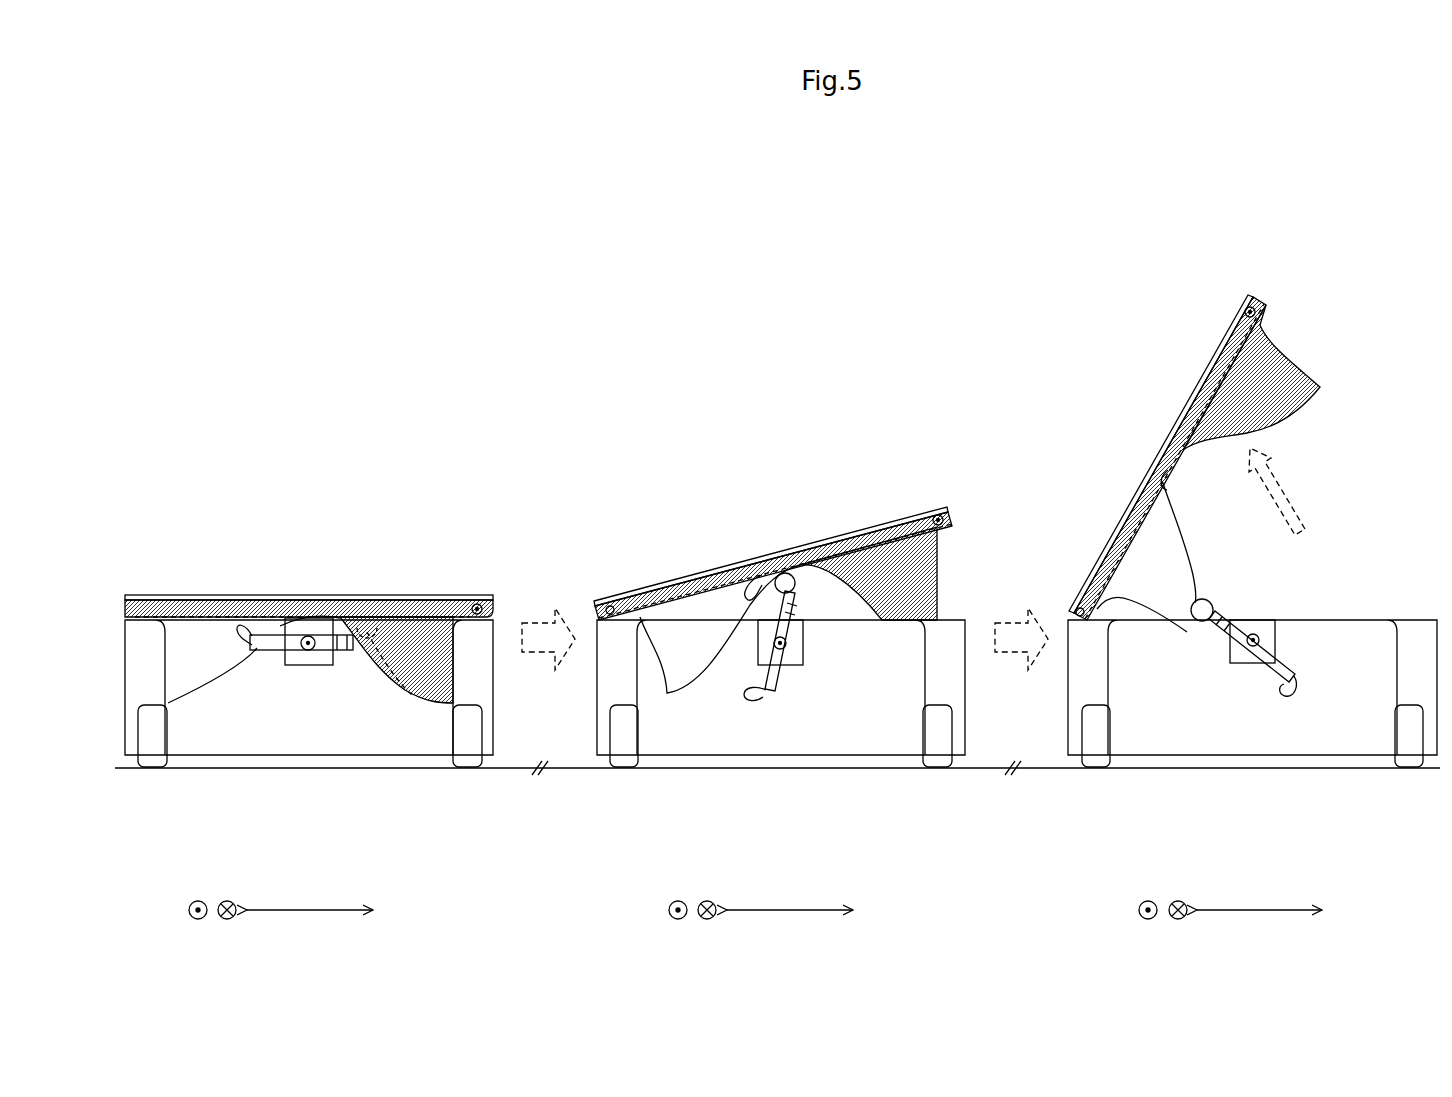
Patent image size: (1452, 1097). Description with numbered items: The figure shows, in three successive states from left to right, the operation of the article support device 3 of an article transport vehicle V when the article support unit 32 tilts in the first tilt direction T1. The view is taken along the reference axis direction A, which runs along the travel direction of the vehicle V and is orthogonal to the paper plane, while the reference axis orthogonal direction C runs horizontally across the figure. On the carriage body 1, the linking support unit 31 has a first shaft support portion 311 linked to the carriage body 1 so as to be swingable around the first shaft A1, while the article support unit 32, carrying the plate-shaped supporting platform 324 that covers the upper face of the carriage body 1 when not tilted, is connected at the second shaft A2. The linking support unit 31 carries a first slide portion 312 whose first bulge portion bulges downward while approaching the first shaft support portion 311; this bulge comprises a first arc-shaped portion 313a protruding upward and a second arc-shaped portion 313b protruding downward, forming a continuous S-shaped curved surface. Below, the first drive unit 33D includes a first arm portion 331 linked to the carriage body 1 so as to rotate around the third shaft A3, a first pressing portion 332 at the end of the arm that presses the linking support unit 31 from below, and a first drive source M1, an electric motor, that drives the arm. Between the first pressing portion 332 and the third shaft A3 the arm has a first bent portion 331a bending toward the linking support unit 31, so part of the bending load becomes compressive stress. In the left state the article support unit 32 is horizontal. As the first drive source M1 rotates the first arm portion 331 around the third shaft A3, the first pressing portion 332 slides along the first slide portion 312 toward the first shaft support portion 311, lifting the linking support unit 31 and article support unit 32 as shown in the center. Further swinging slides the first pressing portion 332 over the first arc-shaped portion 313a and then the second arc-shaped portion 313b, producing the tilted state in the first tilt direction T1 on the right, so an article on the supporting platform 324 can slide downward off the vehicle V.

The carriage body 1 is at (880, 757).
The article support device 3 is at (447, 512).
The linking support unit 31 is at (182, 683).
The first shaft support portion 311 is at (139, 626).
The first slide portion 312 is at (433, 626).
The first arc-shaped portion 313a is at (1150, 480).
The second arc-shaped portion 313b is at (224, 688).
The article support unit 32 is at (272, 570).
The supporting platform 324 is at (298, 593).
The first arm portion 331 is at (352, 638).
The first bent portion 331a is at (356, 652).
The first pressing portion 332 is at (397, 594).
The first drive unit 33D is at (818, 662).
The first drive source M1 is at (310, 666).
The first shaft A1 is at (160, 590).
The second shaft A2 is at (482, 606).
The third shaft A3 is at (311, 648).
The first tilt direction T1 is at (1284, 491).
The article transport vehicle V is at (390, 428).
The reference axis direction A is at (688, 896).
The reference axis orthogonal direction C is at (784, 892).